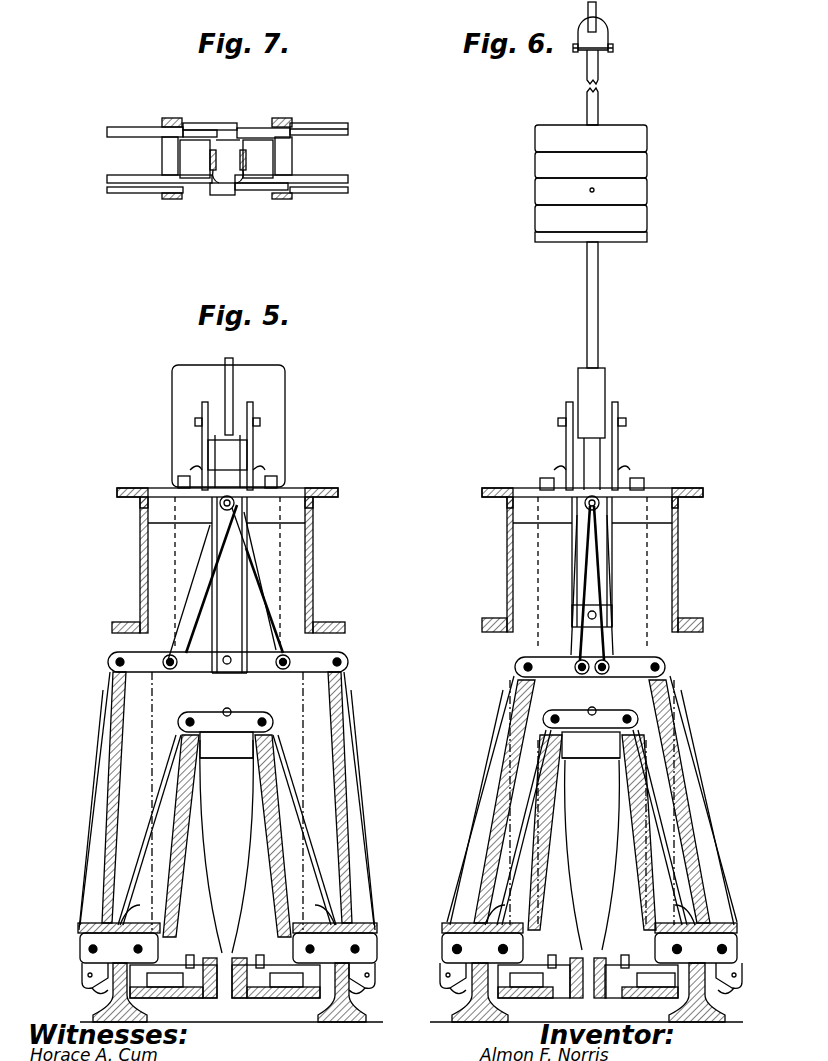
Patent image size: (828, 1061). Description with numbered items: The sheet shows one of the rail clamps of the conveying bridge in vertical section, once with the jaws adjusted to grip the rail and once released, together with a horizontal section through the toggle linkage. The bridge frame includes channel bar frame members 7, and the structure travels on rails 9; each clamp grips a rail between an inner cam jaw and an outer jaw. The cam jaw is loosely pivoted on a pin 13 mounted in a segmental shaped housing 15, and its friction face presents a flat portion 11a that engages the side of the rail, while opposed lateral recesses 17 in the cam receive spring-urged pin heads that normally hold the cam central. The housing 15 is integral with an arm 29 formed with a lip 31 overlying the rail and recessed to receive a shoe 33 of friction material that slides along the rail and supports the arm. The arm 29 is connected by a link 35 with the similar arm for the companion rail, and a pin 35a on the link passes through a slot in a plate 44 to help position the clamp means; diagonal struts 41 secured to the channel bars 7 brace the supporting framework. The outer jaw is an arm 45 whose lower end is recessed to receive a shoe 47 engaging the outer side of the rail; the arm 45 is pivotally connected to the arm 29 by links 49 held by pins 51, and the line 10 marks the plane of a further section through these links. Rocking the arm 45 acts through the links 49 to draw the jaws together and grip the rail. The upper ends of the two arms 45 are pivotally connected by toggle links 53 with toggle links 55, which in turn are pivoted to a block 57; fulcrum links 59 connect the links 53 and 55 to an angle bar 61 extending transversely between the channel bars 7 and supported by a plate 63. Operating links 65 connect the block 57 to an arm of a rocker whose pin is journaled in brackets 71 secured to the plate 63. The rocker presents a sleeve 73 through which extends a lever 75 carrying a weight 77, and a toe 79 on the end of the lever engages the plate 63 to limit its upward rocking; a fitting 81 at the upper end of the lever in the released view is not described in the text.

In FIG. 5, the channel bar frame members 7 is at (140, 548).
In FIG. 6, the channel bar frame members 7 is at (507, 548).
In FIG. 5, the rails 9 is at (100, 1008).
In FIG. 6, the rails 9 is at (465, 1008).
In FIG. 5, the section line 10 is at (400, 950).
In FIG. 5, the flat portion of cam face 11a is at (165, 982).
In FIG. 6, the flat portion of cam face 11a is at (525, 983).
In FIG. 5, the pin 13 is at (194, 958).
In FIG. 6, the pin 13 is at (552, 955).
In FIG. 5, the segmental shaped housing 15 is at (226, 989).
In FIG. 6, the segmental shaped housing 15 is at (590, 989).
In FIG. 5, the opposed lateral recesses 17 is at (185, 992).
In FIG. 6, the opposed lateral recesses 17 is at (555, 993).
In FIG. 5, the arm 29 is at (265, 852).
In FIG. 6, the arm 29 is at (620, 848).
In FIG. 5, the lip 31 is at (82, 926).
In FIG. 6, the lip 31 is at (446, 925).
In FIG. 5, the shoe 33 is at (96, 985).
In FIG. 6, the shoe 33 is at (456, 990).
In FIG. 5, the link 35 is at (222, 714).
In FIG. 6, the link 35 is at (588, 712).
In FIG. 5, the pin 35a is at (226, 745).
In FIG. 6, the pin 35a is at (591, 745).
In FIG. 5, the diagonal struts 41 is at (158, 782).
In FIG. 6, the diagonal struts 41 is at (510, 650).
In FIG. 5, the plate 44 is at (237, 760).
In FIG. 6, the plate 44 is at (598, 760).
In FIG. 5, the arm 45 is at (95, 740).
In FIG. 6, the arm 45 is at (482, 762).
In FIG. 5, the shoe 47 is at (84, 970).
In FIG. 6, the shoe 47 is at (444, 970).
In FIG. 5, the links 49 is at (227, 830).
In FIG. 6, the links 49 is at (590, 827).
In FIG. 5, the pins 51 is at (150, 946).
In FIG. 6, the pins 51 is at (528, 942).
In FIG. 7, the toggle links 53 is at (145, 135).
In FIG. 5, the toggle links 53 is at (140, 674).
In FIG. 6, the toggle links 53 is at (578, 645).
In FIG. 7, the toggle links 55 is at (203, 141).
In FIG. 5, the toggle links 55 is at (195, 676).
In FIG. 6, the toggle links 55 is at (557, 676).
In FIG. 7, the block 57 is at (240, 152).
In FIG. 5, the block 57 is at (225, 648).
In FIG. 6, the block 57 is at (578, 610).
In FIG. 7, the fulcrum links 59 is at (180, 120).
In FIG. 5, the fulcrum links 59 is at (192, 582).
In FIG. 6, the fulcrum links 59 is at (583, 572).
In FIG. 5, the angle bar 61 is at (290, 517).
In FIG. 6, the angle bar 61 is at (528, 512).
In FIG. 5, the plate 63 is at (300, 490).
In FIG. 6, the plate 63 is at (665, 490).
In FIG. 7, the operating links 65 is at (236, 185).
In FIG. 5, the operating links 65 is at (206, 550).
In FIG. 6, the operating links 65 is at (574, 542).
In FIG. 5, the brackets 71 is at (202, 437).
In FIG. 6, the brackets 71 is at (566, 440).
In FIG. 6, the sleeve 73 is at (580, 383).
In FIG. 6, the lever 75 is at (587, 313).
In FIG. 6, the weight 77 is at (548, 165).
In FIG. 5, the toe 79 is at (225, 383).
In FIG. 6, the shackle 81 is at (588, 12).